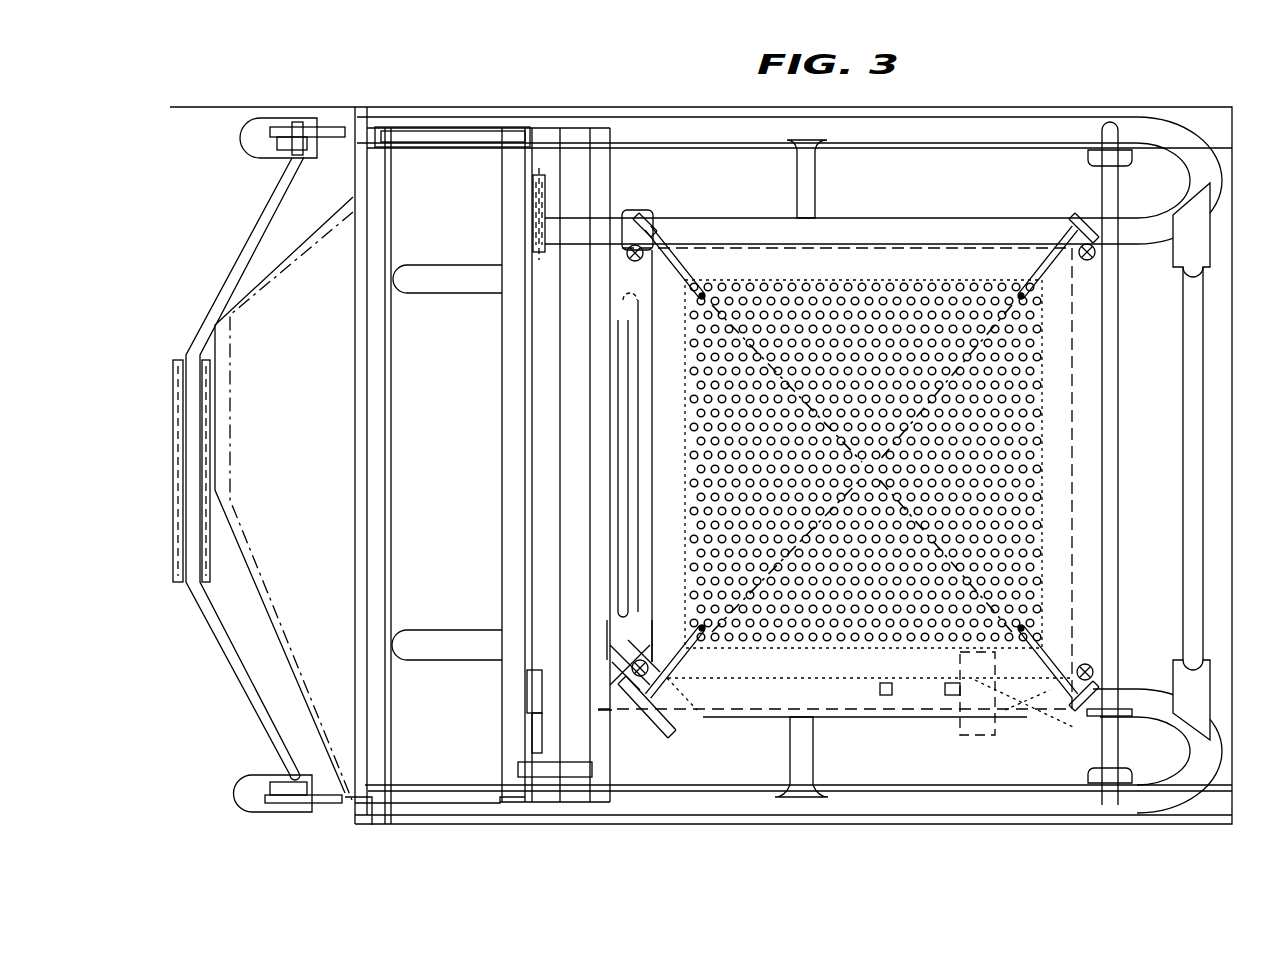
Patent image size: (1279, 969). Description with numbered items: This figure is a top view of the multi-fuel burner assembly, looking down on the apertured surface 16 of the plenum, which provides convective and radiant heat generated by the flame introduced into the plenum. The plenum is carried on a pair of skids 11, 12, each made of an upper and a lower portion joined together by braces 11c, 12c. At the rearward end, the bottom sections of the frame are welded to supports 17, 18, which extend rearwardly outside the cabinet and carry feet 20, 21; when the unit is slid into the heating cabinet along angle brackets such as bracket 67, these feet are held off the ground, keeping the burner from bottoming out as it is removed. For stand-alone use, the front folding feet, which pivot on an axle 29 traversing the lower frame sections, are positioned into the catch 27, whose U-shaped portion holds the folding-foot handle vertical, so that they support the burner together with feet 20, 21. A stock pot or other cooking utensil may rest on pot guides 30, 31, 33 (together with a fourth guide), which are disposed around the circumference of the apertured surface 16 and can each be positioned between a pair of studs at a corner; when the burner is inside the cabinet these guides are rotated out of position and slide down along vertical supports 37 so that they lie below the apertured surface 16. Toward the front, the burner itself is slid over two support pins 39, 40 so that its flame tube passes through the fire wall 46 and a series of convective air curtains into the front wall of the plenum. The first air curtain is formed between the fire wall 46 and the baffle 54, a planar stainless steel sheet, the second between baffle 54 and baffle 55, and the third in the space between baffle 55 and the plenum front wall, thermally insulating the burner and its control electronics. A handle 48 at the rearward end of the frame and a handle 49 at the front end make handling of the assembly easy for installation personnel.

The skid 11 is at (1215, 745).
The brace 11c is at (812, 715).
The skid 12 is at (1068, 132).
The brace 12c is at (817, 190).
The apertured surface 16 is at (870, 273).
The support 17 is at (333, 803).
The support 18 is at (298, 128).
The foot 20 is at (257, 813).
The foot 21 is at (237, 142).
The catch 27 is at (1142, 713).
The axle 29 is at (1123, 406).
The pot guide 30 is at (682, 658).
The pot guide 31 is at (1040, 658).
The pot guide 33 is at (668, 253).
The vertical support 37 is at (612, 240).
The support pin 39 is at (430, 265).
The support pin 40 is at (426, 632).
The fire wall 46 is at (527, 157).
The handle 48 is at (228, 272).
The handle 49 is at (1215, 488).
The baffle 54 is at (560, 157).
The baffle 55 is at (598, 157).
The angle bracket 67 is at (732, 108).